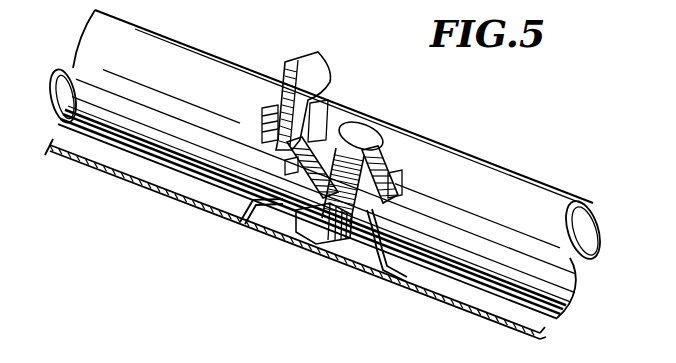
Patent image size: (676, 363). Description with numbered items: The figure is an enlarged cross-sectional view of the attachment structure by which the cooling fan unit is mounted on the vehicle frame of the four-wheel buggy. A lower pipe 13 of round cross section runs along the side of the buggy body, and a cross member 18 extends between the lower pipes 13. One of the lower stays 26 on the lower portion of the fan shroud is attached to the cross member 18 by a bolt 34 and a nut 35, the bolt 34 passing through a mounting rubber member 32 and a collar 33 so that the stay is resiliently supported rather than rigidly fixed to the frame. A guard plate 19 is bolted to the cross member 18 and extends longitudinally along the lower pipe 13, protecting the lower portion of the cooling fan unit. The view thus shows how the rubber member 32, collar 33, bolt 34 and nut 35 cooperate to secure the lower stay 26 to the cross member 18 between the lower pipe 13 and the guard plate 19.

The lower pipe 13 is at (531, 177).
The cross member 18 is at (361, 240).
The guard plate 19 is at (430, 298).
The lower stay 26 is at (283, 105).
The mounting rubber member 32 is at (395, 178).
The collar 33 is at (392, 150).
The bolt 34 is at (353, 128).
The nut 35 is at (317, 232).